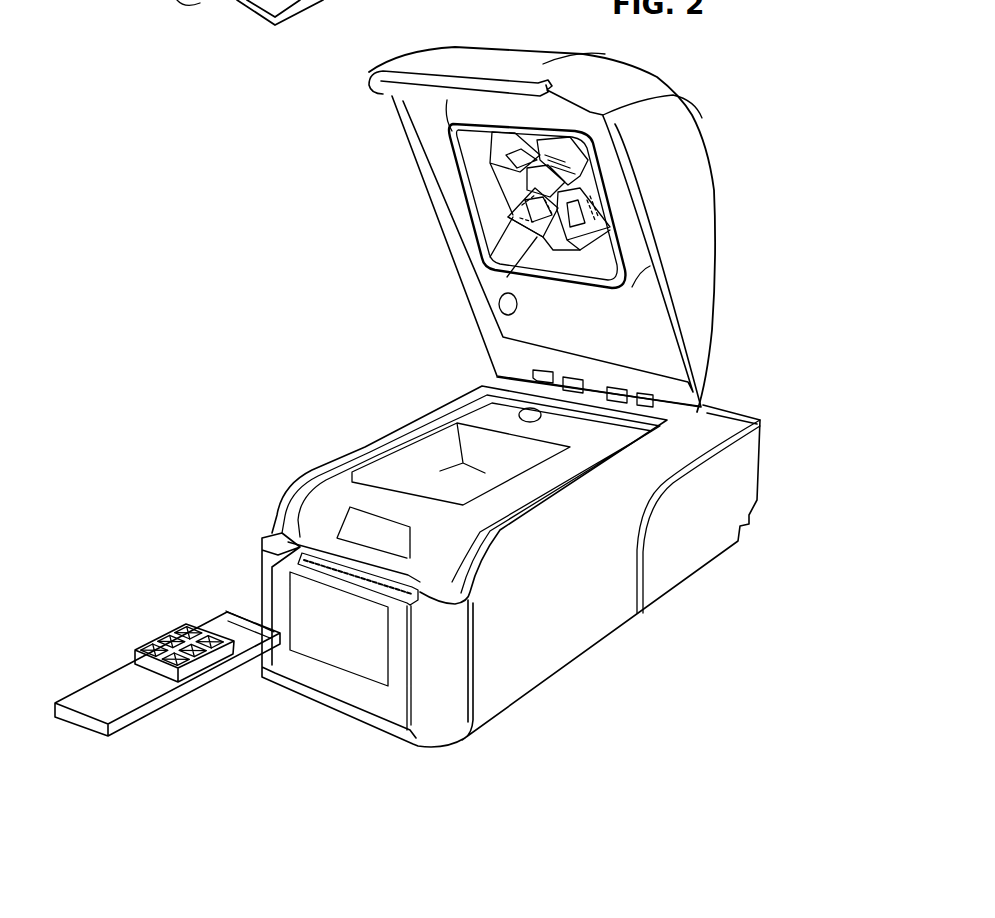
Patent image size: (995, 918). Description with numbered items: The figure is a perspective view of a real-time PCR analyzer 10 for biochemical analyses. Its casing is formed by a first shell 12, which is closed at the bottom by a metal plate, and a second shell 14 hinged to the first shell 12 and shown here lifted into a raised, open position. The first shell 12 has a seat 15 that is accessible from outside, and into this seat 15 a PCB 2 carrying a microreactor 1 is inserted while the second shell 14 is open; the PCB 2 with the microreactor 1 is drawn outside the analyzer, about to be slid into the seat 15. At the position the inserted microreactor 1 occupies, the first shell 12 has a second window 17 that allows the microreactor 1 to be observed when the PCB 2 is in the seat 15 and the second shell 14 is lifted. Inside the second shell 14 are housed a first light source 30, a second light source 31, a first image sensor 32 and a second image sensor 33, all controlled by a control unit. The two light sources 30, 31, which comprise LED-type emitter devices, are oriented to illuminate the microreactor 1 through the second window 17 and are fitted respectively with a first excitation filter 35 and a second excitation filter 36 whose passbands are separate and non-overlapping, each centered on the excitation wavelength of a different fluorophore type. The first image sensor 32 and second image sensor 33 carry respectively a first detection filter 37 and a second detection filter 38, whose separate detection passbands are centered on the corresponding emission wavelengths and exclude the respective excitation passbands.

The microreactor 1 is at (152, 622).
The PCB 2 is at (106, 689).
The real-time PCR analyzer 10 is at (296, 243).
The first shell 12 is at (587, 632).
The second shell 14 is at (693, 143).
The seat 15 is at (383, 536).
The second window 17 is at (441, 468).
The first light source 30 is at (488, 144).
The second light source 31 is at (578, 145).
The first image sensor 32 is at (606, 234).
The second image sensor 33 is at (528, 234).
The first excitation filter 35 is at (507, 175).
The second excitation filter 36 is at (582, 192).
The first detection filter 37 is at (596, 200).
The second detection filter 38 is at (520, 205).